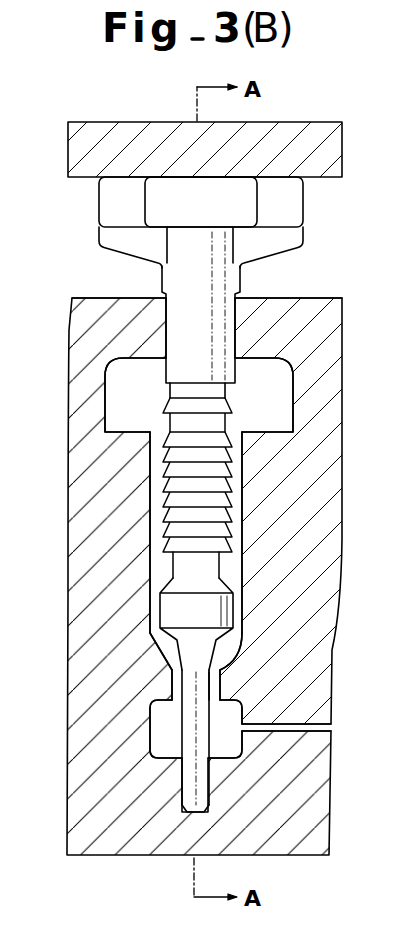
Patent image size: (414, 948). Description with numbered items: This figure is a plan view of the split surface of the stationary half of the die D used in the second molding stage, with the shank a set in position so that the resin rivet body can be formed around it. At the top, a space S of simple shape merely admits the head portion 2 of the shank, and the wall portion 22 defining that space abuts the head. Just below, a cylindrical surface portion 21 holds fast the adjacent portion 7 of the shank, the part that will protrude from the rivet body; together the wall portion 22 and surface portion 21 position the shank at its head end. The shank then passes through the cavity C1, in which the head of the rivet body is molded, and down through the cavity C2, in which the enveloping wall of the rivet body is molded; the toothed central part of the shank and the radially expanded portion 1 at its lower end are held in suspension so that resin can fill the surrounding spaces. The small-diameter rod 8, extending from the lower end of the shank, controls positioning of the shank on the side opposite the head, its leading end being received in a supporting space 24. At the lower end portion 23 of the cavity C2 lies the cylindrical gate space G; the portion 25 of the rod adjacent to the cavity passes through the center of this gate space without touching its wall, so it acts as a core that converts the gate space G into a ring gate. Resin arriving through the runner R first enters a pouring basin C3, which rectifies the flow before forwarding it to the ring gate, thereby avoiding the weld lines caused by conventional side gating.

The space S is at (325, 222).
The die D is at (327, 477).
The wall portion 22 is at (300, 298).
The head portion of the shank 2 is at (165, 200).
The surface portion 21 is at (163, 323).
The adjacent portion of the shank 7 is at (207, 333).
The shank a is at (227, 395).
The cavity for molding the head C1 is at (127, 400).
The cavity for molding the rivet body C2 is at (153, 537).
The radially expanded portion 1 is at (175, 610).
The lower end portion of the cavity 23 is at (244, 647).
The gate space G is at (170, 683).
The pouring basin C3 is at (163, 725).
The runner R is at (330, 728).
The supporting space 24 is at (181, 788).
The portion of the small-diameter rod 25 is at (197, 697).
The small-diameter rod 8 is at (192, 797).